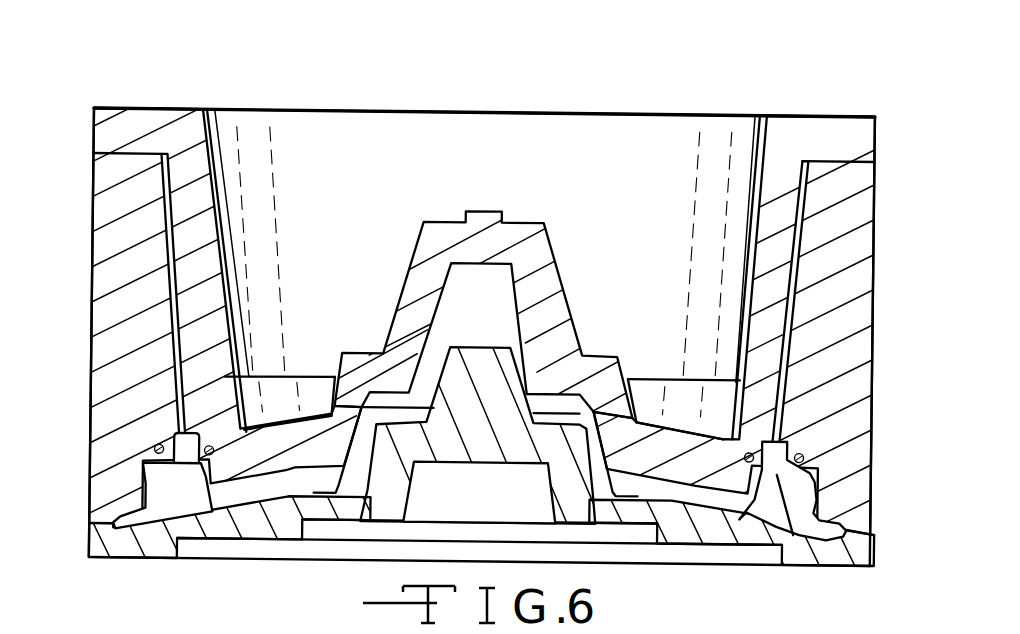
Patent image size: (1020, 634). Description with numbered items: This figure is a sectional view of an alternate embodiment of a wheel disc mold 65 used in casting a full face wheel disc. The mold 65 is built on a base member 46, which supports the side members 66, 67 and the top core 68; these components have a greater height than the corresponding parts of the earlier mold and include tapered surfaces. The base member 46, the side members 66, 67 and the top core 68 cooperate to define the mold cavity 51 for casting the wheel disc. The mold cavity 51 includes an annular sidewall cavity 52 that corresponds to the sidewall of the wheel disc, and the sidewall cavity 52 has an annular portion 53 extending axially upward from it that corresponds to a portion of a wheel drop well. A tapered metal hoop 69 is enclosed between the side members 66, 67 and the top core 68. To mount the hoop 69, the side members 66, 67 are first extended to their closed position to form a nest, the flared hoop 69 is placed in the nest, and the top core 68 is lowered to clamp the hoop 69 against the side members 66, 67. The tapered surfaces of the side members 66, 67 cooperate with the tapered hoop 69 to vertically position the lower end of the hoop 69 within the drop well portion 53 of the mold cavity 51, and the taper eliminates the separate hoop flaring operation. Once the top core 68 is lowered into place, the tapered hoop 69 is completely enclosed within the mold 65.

The base member 46 is at (160, 555).
The mold cavity 51 is at (498, 316).
The annular sidewall cavity 52 is at (196, 509).
The annular portion 53 is at (153, 464).
The wheel disc mold 65 is at (720, 97).
The side member 66 is at (108, 186).
The side member 67 is at (866, 200).
The top core 68 is at (530, 234).
The tapered metal hoop 69 is at (800, 540).